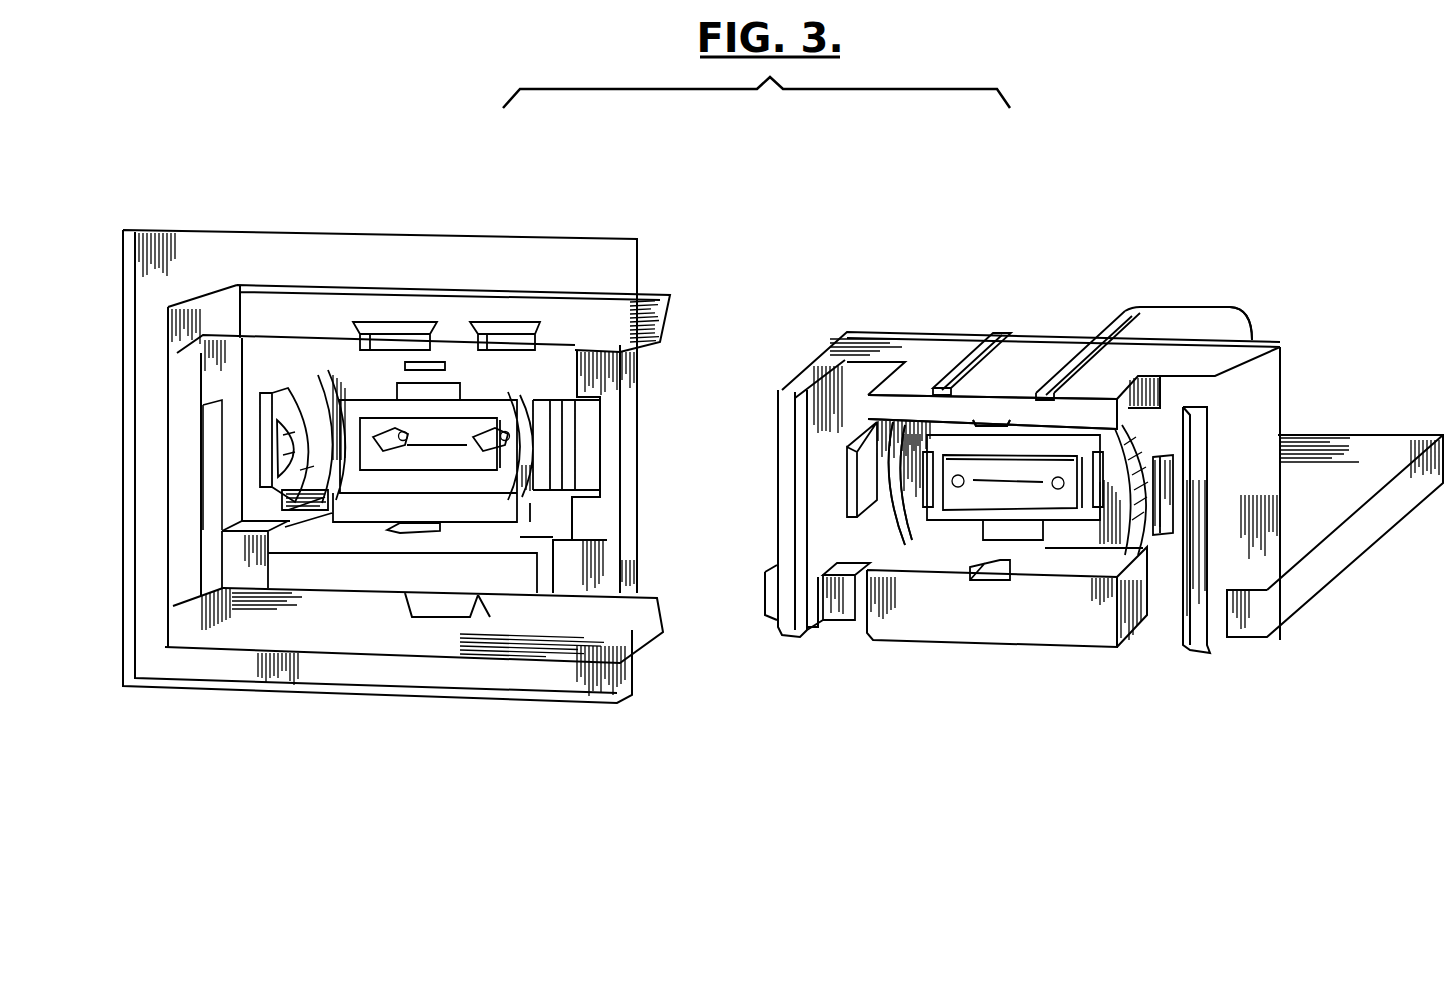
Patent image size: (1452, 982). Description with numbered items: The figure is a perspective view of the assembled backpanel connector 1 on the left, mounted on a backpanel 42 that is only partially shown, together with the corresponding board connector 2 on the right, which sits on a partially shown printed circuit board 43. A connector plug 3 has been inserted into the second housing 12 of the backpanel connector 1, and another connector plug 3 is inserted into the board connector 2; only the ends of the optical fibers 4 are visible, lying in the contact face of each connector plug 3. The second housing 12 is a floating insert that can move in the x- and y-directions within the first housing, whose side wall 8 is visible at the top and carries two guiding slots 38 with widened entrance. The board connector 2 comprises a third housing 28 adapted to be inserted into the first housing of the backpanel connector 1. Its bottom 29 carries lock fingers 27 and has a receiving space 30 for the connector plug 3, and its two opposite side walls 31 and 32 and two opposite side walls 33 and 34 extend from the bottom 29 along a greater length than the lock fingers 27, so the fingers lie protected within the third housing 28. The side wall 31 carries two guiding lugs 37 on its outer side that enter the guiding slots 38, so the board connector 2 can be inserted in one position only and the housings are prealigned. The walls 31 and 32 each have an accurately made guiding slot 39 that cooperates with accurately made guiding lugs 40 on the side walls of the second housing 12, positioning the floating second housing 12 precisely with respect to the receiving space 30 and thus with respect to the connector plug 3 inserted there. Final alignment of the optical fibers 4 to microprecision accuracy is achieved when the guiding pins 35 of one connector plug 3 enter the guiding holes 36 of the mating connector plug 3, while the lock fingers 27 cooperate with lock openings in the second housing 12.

The backpanel connector 1 is at (227, 272).
The board connector 2 is at (846, 333).
The connector plug 3 is at (380, 462).
The optical fibers 4 is at (440, 447).
The side wall 8 is at (282, 312).
The second housing 12 is at (510, 390).
The lock fingers 27 is at (867, 463).
The third housing 28 is at (1288, 352).
The bottom 29 is at (855, 550).
The receiving space 30 is at (927, 537).
The side wall 31 is at (916, 420).
The side wall 32 is at (1100, 620).
The side wall 33 is at (783, 420).
The side wall 34 is at (1245, 403).
The guiding pins 35 is at (503, 437).
The guiding holes 36 is at (952, 487).
The guiding lugs 37 is at (1100, 343).
The guiding slots 38 is at (380, 330).
The guiding slot 39 is at (996, 418).
The guiding lugs 40 is at (440, 362).
The backpanel 42 is at (165, 232).
The printed circuit board 43 is at (1390, 512).